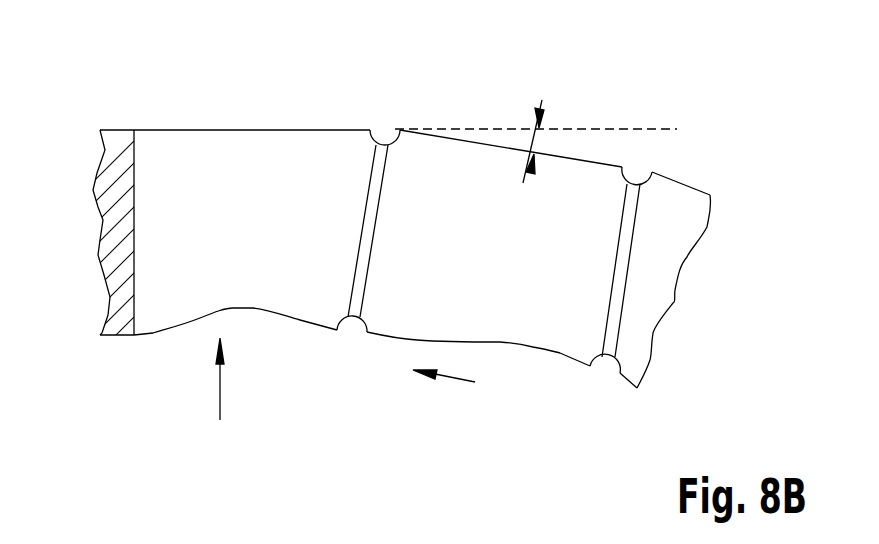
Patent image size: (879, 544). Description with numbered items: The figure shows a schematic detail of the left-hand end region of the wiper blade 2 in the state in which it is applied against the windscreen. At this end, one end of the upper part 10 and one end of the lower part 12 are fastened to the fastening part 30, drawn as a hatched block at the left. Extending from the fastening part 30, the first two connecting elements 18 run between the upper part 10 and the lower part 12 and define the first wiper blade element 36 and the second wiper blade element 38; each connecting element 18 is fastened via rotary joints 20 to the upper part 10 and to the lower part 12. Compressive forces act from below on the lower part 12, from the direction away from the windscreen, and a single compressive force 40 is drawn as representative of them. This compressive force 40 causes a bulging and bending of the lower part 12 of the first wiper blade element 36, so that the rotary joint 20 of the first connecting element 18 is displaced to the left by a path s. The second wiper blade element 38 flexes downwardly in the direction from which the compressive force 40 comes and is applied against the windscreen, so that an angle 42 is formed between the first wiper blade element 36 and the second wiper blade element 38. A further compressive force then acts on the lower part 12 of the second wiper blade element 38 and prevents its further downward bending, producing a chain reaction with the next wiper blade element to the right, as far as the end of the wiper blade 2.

The wiper blade 2 is at (688, 335).
The upper part 10 is at (247, 130).
The lower part 12 is at (252, 309).
The connecting elements 18 is at (360, 240).
The rotary joints 20 is at (392, 128).
The fastening part 30 is at (112, 233).
The first wiper blade element 36 is at (272, 362).
The second wiper blade element 38 is at (512, 392).
The compressive force 40 is at (218, 388).
The angle 42 is at (538, 143).
The path s is at (448, 382).